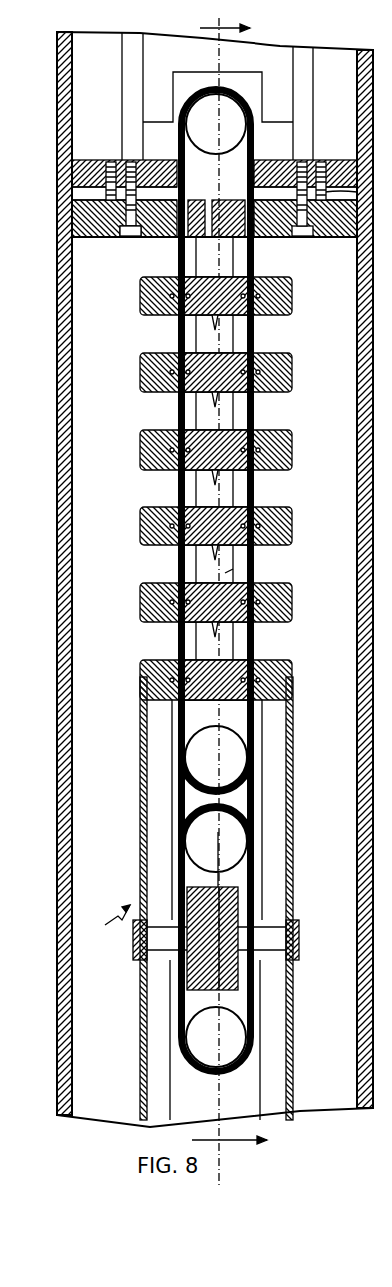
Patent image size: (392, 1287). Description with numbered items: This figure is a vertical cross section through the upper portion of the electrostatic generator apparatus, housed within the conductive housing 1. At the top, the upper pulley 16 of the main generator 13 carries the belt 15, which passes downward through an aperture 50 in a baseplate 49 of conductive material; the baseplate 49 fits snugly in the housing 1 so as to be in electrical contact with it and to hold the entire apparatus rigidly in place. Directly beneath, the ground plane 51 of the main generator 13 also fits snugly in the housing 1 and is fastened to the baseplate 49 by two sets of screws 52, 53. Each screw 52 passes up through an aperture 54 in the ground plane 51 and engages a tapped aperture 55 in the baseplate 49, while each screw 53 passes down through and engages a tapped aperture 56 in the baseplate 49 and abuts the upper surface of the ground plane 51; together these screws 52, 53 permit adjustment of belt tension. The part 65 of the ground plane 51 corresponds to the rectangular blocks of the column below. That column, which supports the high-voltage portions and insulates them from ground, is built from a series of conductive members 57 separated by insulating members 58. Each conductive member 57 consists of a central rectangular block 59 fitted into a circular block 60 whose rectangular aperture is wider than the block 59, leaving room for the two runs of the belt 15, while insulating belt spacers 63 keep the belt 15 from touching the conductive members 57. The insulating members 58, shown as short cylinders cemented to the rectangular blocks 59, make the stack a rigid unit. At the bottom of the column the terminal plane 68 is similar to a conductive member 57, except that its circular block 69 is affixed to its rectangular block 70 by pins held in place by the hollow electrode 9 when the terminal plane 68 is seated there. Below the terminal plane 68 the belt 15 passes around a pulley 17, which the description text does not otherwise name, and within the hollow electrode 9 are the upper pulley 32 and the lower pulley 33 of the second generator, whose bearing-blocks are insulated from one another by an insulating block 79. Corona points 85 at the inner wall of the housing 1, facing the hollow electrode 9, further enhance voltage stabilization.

The housing 1 is at (62, 616).
The hollow electrode 9 is at (187, 590).
The main generator 13 is at (88, 376).
The belt 15 is at (254, 272).
The upper pulley 16 is at (212, 98).
The upper pulley 17 is at (238, 763).
The upper pulley of the second generator 32 is at (238, 836).
The lower pulley of the second generator 33 is at (236, 1050).
The baseplate 49 is at (80, 168).
The aperture 50 is at (193, 165).
The ground plane 51 is at (64, 240).
The screw 52 is at (133, 238).
The screw 53 is at (340, 194).
The aperture 54 is at (127, 236).
The tapped aperture 55 is at (124, 160).
The tapped aperture 56 is at (322, 162).
The conductive member 57 is at (292, 460).
The insulating member 58 is at (233, 569).
The rectangular block 59 is at (258, 400).
The circular block 60 is at (292, 378).
The belt spacer 63 is at (258, 474).
The part of the ground plane 65 is at (205, 245).
The terminal plane 68 is at (296, 676).
The circular block 69 is at (284, 662).
The rectangular block 70 is at (216, 698).
The insulating block 79 is at (240, 962).
The corona point 85 is at (72, 745).